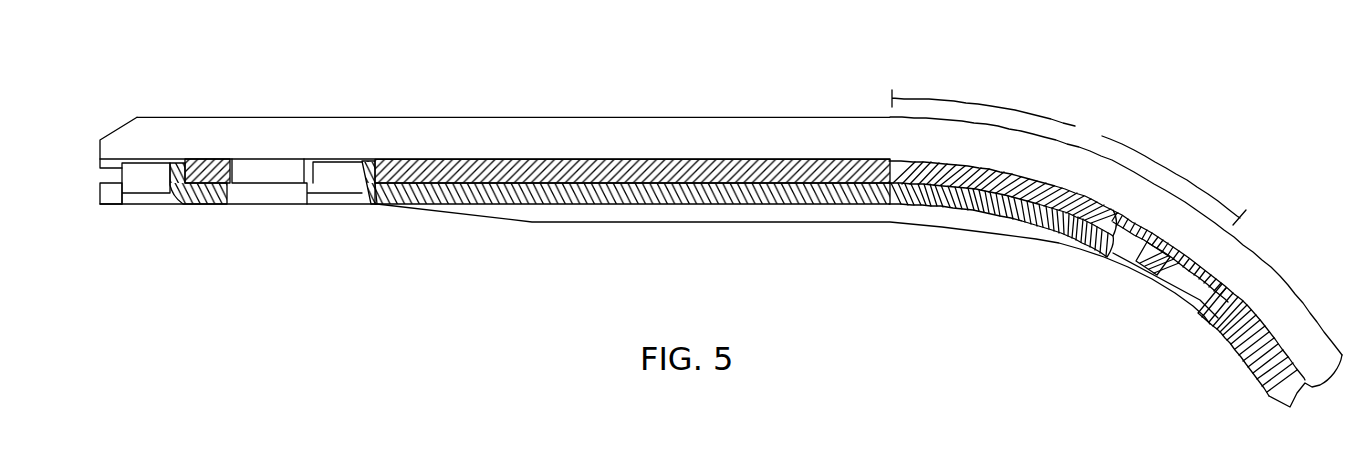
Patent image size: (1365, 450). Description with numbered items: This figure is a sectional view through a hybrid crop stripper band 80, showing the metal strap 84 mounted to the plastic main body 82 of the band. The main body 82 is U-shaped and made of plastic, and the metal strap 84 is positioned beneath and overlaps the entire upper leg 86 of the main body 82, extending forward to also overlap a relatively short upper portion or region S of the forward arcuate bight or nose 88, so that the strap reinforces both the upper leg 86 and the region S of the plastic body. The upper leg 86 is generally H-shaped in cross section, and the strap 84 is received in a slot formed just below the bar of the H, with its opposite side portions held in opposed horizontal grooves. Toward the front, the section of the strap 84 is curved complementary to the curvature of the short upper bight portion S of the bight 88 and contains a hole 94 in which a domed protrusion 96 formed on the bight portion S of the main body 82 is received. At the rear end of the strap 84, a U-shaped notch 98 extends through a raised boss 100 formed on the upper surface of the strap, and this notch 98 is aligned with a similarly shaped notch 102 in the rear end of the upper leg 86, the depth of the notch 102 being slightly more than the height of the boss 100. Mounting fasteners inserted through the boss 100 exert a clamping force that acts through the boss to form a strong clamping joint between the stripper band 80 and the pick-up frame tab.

The hybrid crop stripper band 80 is at (756, 100).
The main body 82 is at (417, 103).
The metal strap 84 is at (617, 219).
The upper leg 86 is at (583, 116).
The forward arcuate bight 88 is at (1290, 285).
The hole 94 is at (1110, 232).
The domed protrusion 96 is at (1120, 245).
The U-shaped notch 98 is at (107, 194).
The raised boss 100 is at (128, 173).
The notch 102 is at (104, 168).
The upper portion of the bight S is at (1069, 157).